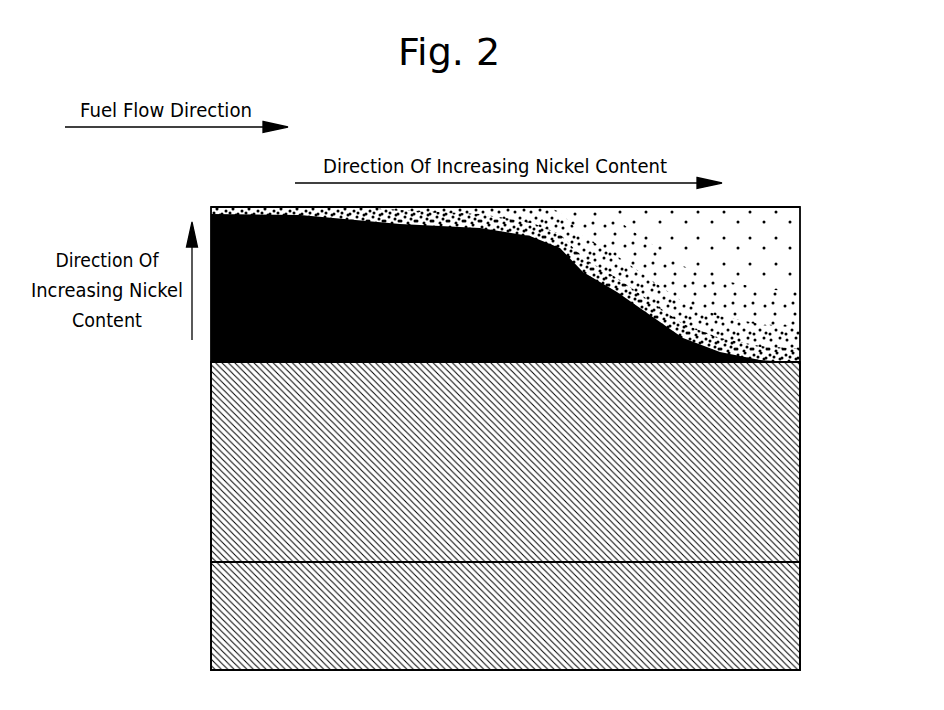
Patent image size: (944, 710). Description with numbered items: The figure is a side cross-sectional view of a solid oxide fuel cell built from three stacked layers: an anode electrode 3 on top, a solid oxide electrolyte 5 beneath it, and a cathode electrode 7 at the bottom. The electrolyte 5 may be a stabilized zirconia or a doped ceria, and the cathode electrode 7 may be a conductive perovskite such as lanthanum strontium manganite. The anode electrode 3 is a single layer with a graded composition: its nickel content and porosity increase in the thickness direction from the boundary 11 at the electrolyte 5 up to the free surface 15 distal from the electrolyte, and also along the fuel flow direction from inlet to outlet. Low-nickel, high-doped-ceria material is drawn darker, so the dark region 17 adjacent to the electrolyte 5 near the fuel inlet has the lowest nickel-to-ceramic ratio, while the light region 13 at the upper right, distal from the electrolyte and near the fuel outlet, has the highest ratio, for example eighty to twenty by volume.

The anode electrode 3 is at (800, 286).
The solid oxide electrolyte 5 is at (220, 463).
The cathode electrode 7 is at (220, 620).
The anode/electrolyte interface surface 11 is at (211, 362).
The second (nickel-poor) portion of anode electrode 13 is at (800, 207).
The outer surface of anode electrode 15 is at (211, 207).
The first (nickel-rich) portion of anode electrode 17 is at (800, 362).